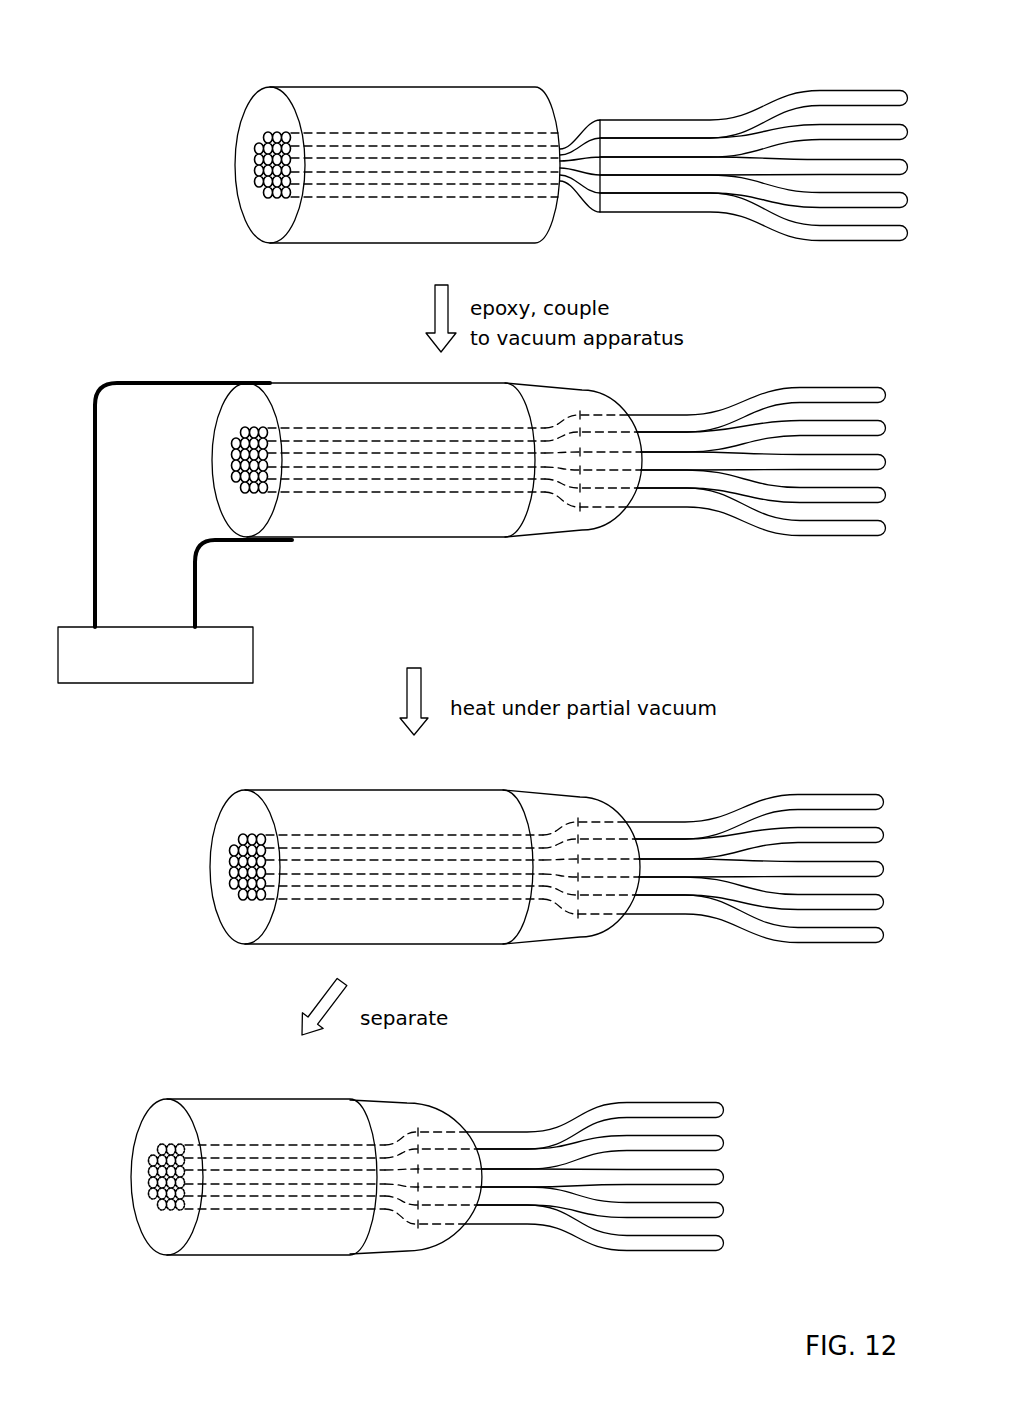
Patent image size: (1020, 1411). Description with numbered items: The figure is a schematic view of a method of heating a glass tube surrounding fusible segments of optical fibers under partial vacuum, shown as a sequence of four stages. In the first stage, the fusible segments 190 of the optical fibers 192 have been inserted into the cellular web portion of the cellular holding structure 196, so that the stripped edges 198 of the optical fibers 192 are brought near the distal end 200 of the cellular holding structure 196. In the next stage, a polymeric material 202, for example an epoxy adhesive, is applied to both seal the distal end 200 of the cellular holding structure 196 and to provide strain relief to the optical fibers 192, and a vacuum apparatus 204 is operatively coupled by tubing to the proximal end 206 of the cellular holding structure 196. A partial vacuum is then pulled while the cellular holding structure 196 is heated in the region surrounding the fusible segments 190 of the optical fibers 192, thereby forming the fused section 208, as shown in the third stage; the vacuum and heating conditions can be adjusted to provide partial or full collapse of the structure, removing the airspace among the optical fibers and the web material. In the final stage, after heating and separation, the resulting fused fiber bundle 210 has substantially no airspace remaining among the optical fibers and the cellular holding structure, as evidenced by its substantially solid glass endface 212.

The fusible segments 190 is at (430, 255).
The optical fibers 192 is at (818, 133).
The cellular holding structure 196 is at (312, 230).
The stripped edges 198 is at (607, 94).
The distal end 200 is at (552, 107).
The polymeric material 202 is at (558, 403).
The vacuum apparatus 204 is at (232, 653).
The proximal end 206 is at (273, 364).
The fused section 208 is at (402, 783).
The fused fiber bundle 210 is at (397, 1129).
The substantially solid glass endface 212 is at (103, 1161).